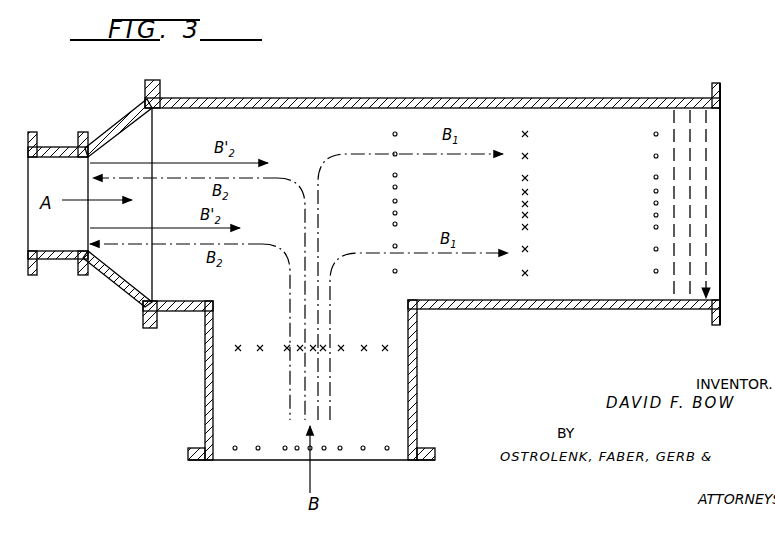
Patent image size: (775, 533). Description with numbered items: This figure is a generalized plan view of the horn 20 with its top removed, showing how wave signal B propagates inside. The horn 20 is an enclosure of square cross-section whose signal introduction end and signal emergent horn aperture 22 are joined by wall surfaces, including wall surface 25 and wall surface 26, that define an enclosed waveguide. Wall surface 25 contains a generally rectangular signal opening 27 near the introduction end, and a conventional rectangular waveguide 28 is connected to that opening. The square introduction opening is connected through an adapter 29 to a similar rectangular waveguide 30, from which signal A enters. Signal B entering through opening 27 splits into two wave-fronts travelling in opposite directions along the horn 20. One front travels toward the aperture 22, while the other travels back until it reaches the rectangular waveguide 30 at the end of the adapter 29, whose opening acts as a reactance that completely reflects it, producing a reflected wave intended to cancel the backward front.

The horn 20 is at (451, 204).
The horn aperture 22 is at (708, 257).
The wall surface 25 is at (530, 301).
The wall surface 26 is at (438, 98).
The signal opening 27 is at (363, 302).
The rectangular waveguide 28 is at (383, 383).
The adapter 29 is at (121, 120).
The rectangular waveguide 30 is at (52, 157).